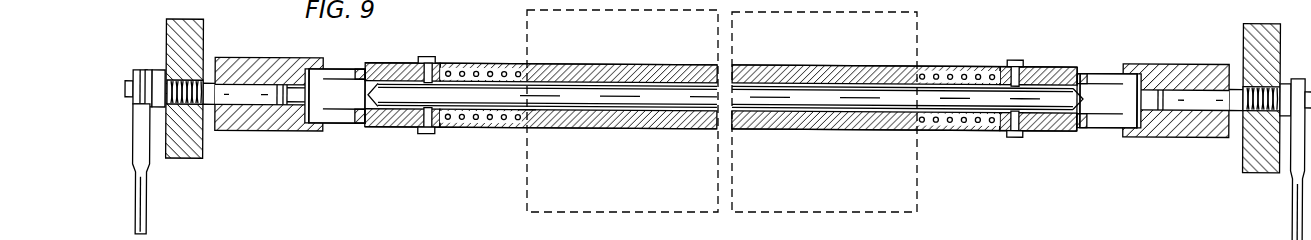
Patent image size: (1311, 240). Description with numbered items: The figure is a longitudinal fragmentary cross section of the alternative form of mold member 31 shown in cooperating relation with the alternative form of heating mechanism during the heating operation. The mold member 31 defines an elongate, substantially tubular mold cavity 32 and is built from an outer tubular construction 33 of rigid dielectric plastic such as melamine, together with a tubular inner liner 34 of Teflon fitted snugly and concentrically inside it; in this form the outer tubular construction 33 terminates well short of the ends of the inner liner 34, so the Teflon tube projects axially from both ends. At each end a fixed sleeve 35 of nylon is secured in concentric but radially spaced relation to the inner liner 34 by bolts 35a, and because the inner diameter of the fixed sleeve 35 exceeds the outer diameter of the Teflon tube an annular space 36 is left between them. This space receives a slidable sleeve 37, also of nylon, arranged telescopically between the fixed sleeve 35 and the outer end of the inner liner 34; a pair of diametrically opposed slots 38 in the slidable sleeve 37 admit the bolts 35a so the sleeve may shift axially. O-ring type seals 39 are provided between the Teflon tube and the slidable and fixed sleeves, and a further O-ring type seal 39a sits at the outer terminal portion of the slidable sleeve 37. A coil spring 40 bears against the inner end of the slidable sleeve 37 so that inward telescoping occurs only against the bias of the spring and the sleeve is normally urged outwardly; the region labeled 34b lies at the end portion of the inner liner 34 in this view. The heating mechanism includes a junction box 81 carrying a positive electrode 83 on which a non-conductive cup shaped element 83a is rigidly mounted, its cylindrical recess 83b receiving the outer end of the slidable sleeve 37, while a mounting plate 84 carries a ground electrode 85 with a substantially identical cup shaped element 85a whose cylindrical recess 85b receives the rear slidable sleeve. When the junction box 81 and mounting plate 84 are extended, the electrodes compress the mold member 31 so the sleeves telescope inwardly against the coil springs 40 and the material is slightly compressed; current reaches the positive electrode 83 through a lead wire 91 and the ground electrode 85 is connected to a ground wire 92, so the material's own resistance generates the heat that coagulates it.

The mold member 31 is at (722, 111).
The mold cavity 32 is at (828, 108).
The outer tubular construction 33 is at (720, 113).
The tubular inner liner 34 is at (547, 94).
The shaft end portion 34b is at (504, 132).
The fixed sleeve 35 is at (721, 87).
The bolts 35a is at (716, 103).
The annular space 36 is at (720, 106).
The slidable sleeve 37 is at (723, 113).
The slots 38 is at (721, 96).
The O-ring type seals 39 is at (725, 96).
The O-ring type seal 39a is at (723, 98).
The coil spring 40 is at (720, 92).
The junction box 81 is at (205, 88).
The positive electrodes 83 is at (215, 89).
The cup shaped element 83a is at (269, 109).
The cylindrical recess 83b is at (301, 77).
The mounting plate 84 is at (1238, 99).
The ground electrodes 85 is at (1210, 98).
The cup shaped element 85a is at (1176, 90).
The cylindrical recess 85b is at (1140, 77).
The lead wire 91 is at (156, 169).
The ground wire 92 is at (1283, 159).